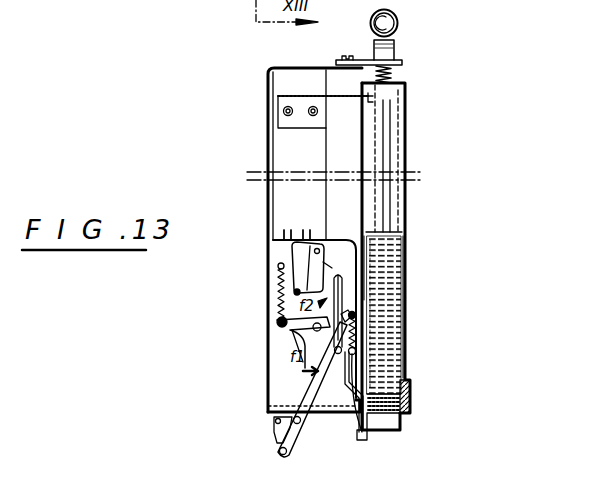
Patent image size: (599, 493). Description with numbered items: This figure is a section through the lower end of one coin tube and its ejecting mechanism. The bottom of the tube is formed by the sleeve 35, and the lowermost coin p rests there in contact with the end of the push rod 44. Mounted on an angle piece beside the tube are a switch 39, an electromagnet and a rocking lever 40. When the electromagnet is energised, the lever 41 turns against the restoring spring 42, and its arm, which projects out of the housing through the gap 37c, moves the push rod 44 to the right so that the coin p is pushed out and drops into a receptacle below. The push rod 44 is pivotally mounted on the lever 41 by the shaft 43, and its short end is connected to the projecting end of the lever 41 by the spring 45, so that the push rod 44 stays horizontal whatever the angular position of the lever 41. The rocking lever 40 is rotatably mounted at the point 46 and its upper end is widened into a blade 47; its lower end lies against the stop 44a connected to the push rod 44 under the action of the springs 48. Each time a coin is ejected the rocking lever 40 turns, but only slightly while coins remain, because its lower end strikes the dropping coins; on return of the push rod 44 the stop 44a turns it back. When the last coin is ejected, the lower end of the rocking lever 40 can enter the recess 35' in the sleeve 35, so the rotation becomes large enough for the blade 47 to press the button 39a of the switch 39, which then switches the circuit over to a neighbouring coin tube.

The button 39a is at (336, 238).
The switch 39 is at (293, 258).
The restoring spring 42 is at (276, 288).
The lever 41 is at (274, 326).
The shaft 43 is at (283, 402).
The point 46 is at (347, 349).
The springs 48 is at (356, 329).
The push rod 44 is at (320, 427).
The spring 45 is at (277, 437).
The gap 37c is at (341, 427).
The stop 44a is at (369, 435).
The blade 47 is at (362, 268).
The rocking lever 40 is at (370, 302).
The recess 35' is at (433, 307).
The sleeve 35 is at (428, 395).
The coin p is at (400, 422).